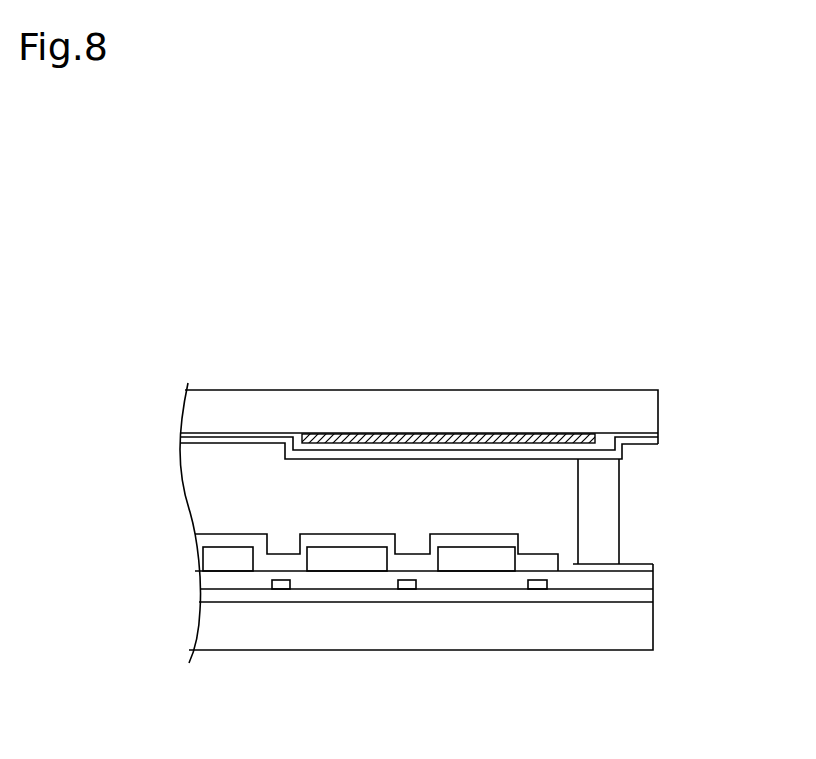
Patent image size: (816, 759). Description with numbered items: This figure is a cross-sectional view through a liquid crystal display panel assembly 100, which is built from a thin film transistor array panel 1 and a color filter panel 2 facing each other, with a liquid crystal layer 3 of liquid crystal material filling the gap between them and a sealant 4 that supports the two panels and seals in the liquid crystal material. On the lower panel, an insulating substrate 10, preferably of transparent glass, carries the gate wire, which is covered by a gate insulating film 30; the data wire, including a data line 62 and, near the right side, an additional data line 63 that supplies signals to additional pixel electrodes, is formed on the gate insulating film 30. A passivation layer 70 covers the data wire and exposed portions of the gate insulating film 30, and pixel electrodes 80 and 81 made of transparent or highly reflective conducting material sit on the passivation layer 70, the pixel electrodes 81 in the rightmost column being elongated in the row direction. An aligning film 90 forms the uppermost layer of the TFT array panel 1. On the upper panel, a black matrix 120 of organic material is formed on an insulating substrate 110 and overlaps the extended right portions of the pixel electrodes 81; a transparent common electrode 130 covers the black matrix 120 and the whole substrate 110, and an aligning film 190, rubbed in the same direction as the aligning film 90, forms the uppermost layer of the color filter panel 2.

The thin film transistor array panel 1 is at (431, 523).
The color filter panel 2 is at (419, 386).
The liquid crystal layer 3 is at (415, 577).
The sealant 4 is at (624, 511).
The insulating substrate 10 is at (421, 634).
The gate insulating film 30 is at (457, 604).
The data line 62 is at (266, 634).
The additional data line 63 is at (459, 638).
The passivation layer 70 is at (451, 561).
The pixel electrode 80 is at (217, 652).
The pixel electrode 81 is at (359, 624).
The aligning film 90 is at (342, 550).
The panel assembly 100 is at (710, 462).
The insulating substrate 110 is at (419, 393).
The black matrix 120 is at (448, 393).
The common electrode 130 is at (419, 386).
The aligning film 190 is at (419, 401).